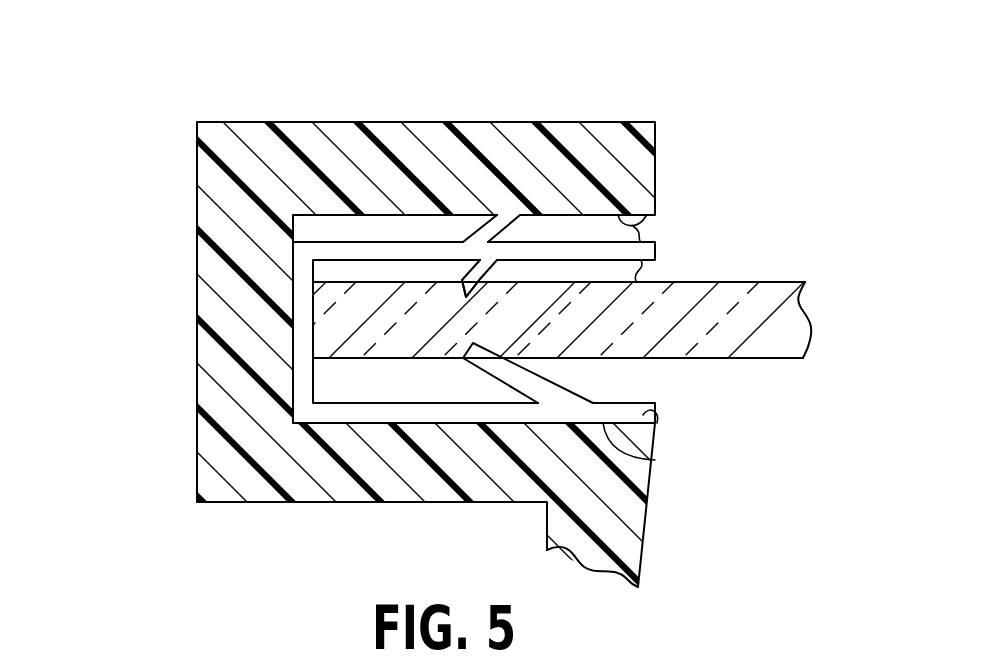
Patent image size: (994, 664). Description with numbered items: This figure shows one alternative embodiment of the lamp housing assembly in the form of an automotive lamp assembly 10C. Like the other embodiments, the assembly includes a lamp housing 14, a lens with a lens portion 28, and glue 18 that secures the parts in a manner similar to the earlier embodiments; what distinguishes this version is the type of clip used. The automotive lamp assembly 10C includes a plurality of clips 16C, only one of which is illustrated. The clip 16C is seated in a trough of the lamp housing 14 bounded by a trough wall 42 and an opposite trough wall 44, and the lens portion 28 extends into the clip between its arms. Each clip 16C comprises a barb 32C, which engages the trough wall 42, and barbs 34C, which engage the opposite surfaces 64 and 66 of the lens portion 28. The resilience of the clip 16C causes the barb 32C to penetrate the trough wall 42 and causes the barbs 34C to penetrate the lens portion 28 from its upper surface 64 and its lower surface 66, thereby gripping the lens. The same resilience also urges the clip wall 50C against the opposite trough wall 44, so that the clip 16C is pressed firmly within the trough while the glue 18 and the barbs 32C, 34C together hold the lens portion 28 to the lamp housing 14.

The automotive lamp assembly 10C is at (145, 211).
The lamp housing 14 is at (290, 62).
The clip 16C is at (672, 252).
The glue 18 is at (636, 275).
The lens portion 28 is at (800, 307).
The barb 32C is at (508, 213).
The barbs 34C is at (480, 277).
The trough wall 42 is at (648, 223).
The opposite trough wall 44 is at (645, 412).
The clip wall 50C is at (655, 455).
The surface 64 is at (780, 278).
The surface 66 is at (748, 358).